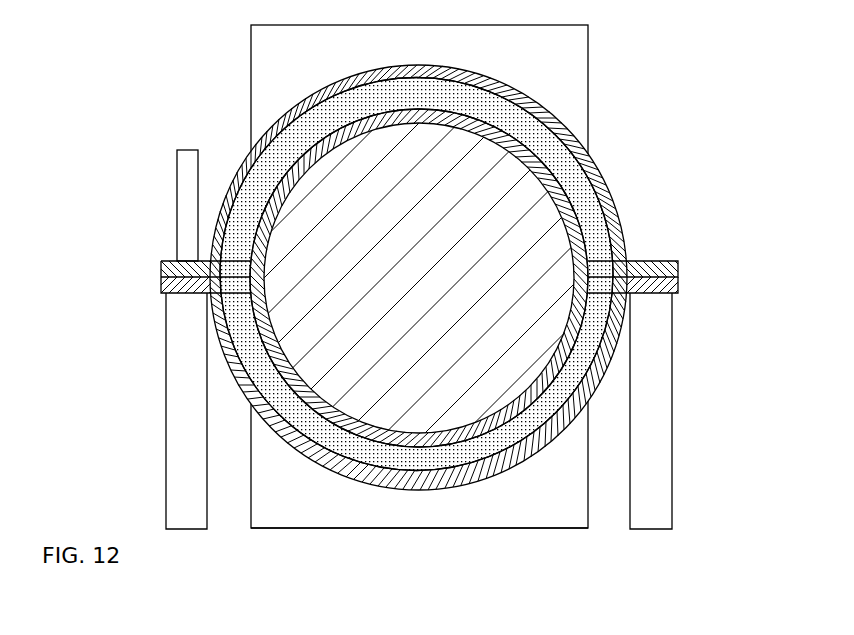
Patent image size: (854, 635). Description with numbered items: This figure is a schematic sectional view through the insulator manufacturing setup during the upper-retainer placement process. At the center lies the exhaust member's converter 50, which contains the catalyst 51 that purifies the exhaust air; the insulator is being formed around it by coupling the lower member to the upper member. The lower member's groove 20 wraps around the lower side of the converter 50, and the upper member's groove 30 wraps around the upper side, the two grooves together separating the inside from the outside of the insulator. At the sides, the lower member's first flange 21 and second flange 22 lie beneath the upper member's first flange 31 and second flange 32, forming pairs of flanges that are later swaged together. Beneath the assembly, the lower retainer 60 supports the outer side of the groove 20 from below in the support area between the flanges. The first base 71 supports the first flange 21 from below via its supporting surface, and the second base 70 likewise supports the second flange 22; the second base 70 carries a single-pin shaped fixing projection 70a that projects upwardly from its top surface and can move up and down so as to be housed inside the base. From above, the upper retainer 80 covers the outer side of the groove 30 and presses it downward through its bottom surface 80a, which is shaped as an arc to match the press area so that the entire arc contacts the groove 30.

The groove 20 is at (375, 485).
The first flange 21 is at (665, 280).
The second flange 22 is at (173, 287).
The groove 30 is at (603, 177).
The first flange 31 is at (652, 263).
The second flange 32 is at (175, 272).
The converter 50 is at (577, 223).
The catalyst 51 is at (482, 195).
The lower retainer 60 is at (507, 518).
The second base 70 is at (182, 400).
The fixing projection 70a is at (188, 150).
The first base 71 is at (655, 385).
The upper retainer 80 is at (562, 55).
The bottom surface 80a is at (297, 102).